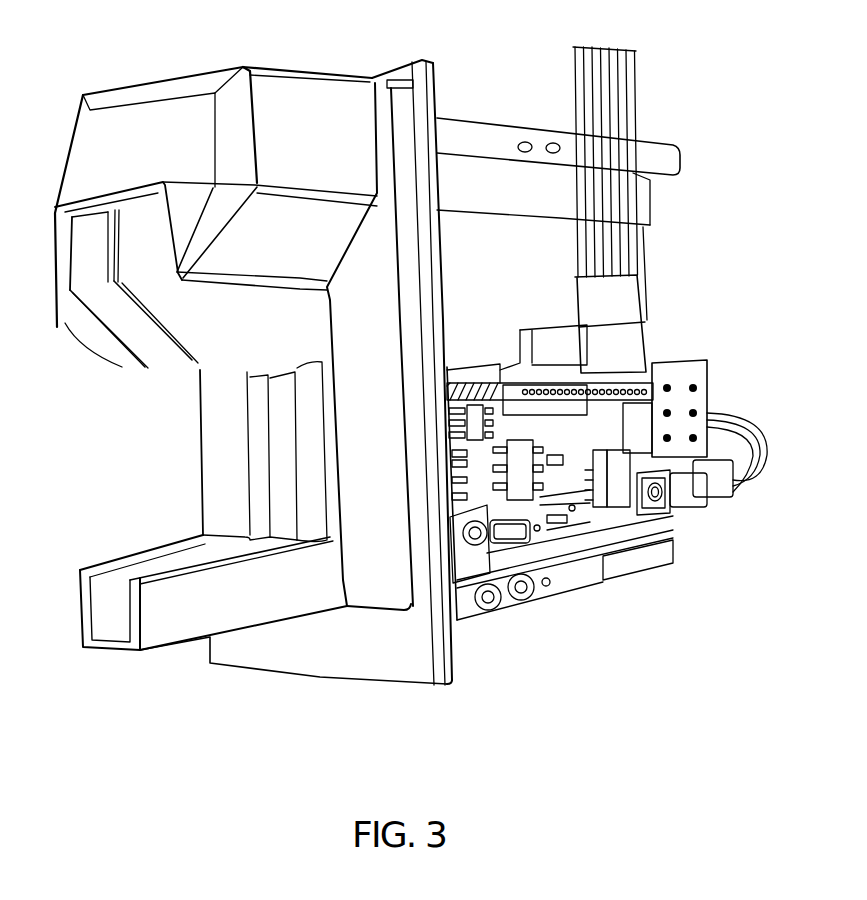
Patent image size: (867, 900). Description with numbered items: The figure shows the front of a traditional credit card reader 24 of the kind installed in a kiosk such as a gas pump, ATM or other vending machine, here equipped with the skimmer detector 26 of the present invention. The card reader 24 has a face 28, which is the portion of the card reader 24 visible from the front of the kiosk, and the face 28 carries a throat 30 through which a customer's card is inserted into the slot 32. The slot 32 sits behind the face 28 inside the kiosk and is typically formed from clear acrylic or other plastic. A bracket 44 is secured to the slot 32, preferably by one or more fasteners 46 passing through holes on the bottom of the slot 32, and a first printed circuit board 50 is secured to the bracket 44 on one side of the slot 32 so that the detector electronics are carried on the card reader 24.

The credit card reader 24 is at (482, 706).
The skimmer detector 26 is at (694, 540).
The face 28 is at (168, 648).
The throat 30 is at (260, 432).
The slot 32 is at (283, 457).
The bracket 44 is at (640, 516).
The fasteners 46 is at (521, 602).
The first printed circuit board 50 is at (610, 520).